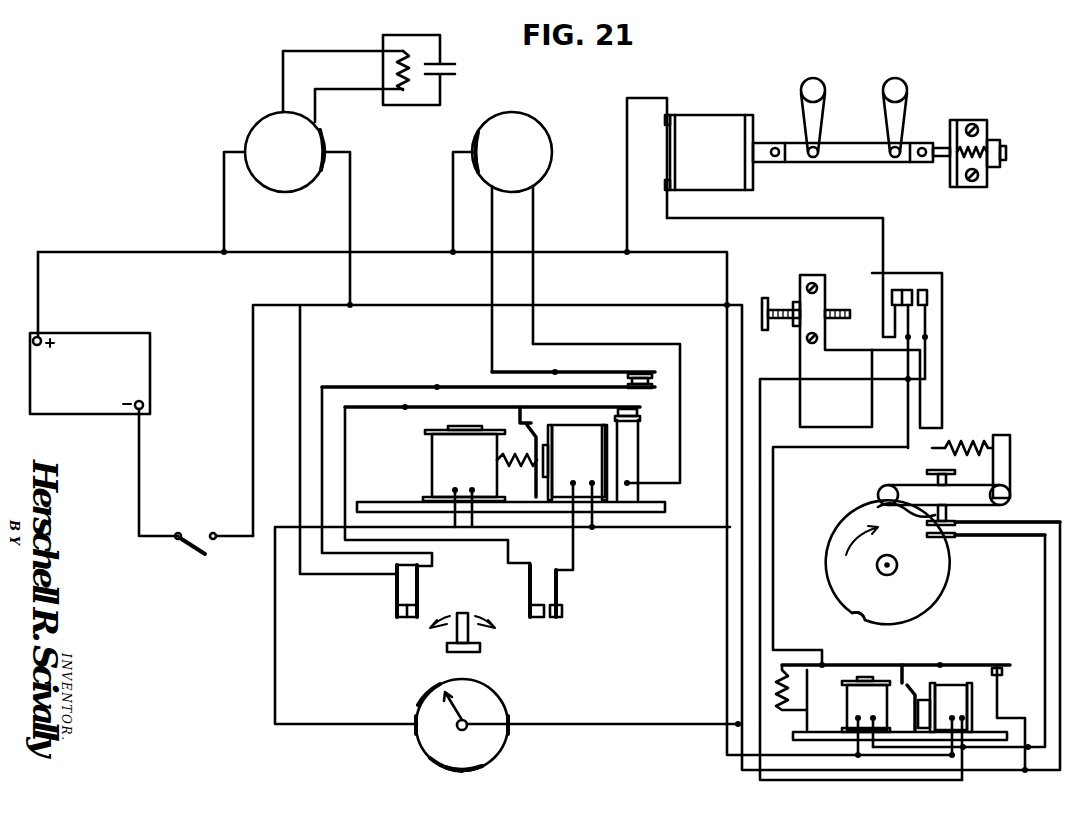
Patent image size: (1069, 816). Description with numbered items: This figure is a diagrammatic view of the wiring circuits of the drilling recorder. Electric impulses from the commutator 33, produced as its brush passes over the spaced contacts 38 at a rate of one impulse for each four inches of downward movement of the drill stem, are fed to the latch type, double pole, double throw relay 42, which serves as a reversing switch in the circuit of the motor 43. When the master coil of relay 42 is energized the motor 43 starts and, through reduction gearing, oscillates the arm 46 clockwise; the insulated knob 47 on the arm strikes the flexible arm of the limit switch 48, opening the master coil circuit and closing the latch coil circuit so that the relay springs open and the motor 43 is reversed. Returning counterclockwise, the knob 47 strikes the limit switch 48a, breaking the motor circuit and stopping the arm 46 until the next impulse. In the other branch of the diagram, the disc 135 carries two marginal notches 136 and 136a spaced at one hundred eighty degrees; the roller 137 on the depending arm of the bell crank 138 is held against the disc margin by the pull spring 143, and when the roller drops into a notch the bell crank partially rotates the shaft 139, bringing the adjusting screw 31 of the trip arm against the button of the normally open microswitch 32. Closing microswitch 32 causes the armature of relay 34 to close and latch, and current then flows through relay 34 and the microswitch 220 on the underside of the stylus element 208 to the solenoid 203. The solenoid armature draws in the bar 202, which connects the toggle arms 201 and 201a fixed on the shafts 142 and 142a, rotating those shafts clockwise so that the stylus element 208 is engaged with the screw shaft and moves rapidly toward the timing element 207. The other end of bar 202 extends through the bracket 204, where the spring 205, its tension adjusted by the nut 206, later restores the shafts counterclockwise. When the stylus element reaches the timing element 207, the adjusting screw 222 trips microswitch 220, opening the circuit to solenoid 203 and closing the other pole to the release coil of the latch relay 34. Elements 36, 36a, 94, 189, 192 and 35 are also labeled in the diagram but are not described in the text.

The main supply conductor 36 is at (142, 252).
The branch conductor 36a is at (350, 225).
The motor 94 is at (256, 126).
The motor 43 is at (536, 122).
The battery 189 is at (150, 364).
The switch 192 is at (187, 532).
The latch type double pole double throw relay 42 is at (463, 387).
The limit switch 48a is at (394, 603).
The single pole double throw limit switch 48 is at (560, 625).
The knob 47 is at (468, 613).
The arm 46 is at (480, 650).
The commutator 33 is at (502, 744).
The pointer 35 is at (462, 706).
The spaced contacts 38 is at (458, 770).
The solenoid 203 is at (713, 116).
The bar 202 is at (853, 163).
The shaft 142a is at (822, 80).
The toggle arm 201a is at (820, 115).
The shaft 142 is at (905, 80).
The toggle arm 201 is at (902, 112).
The bracket 204 is at (988, 124).
The spring 205 is at (986, 148).
The nut 206 is at (997, 170).
The timing element 207 is at (826, 275).
The adjusting screw 222 is at (834, 310).
The stylus element 208 is at (942, 273).
The single pole double throw microswitch 220 is at (906, 290).
The pull spring 143 is at (972, 440).
The bell crank 138 is at (1010, 468).
The roller 137 is at (878, 492).
The shaft 139 is at (1010, 500).
The adjusting screw 31 is at (927, 470).
The single pole single throw microswitch 32 is at (973, 540).
The disc 135 is at (825, 578).
The marginal notch 136 is at (858, 620).
The marginal notch 136a is at (872, 510).
The latch relay 34 is at (902, 665).